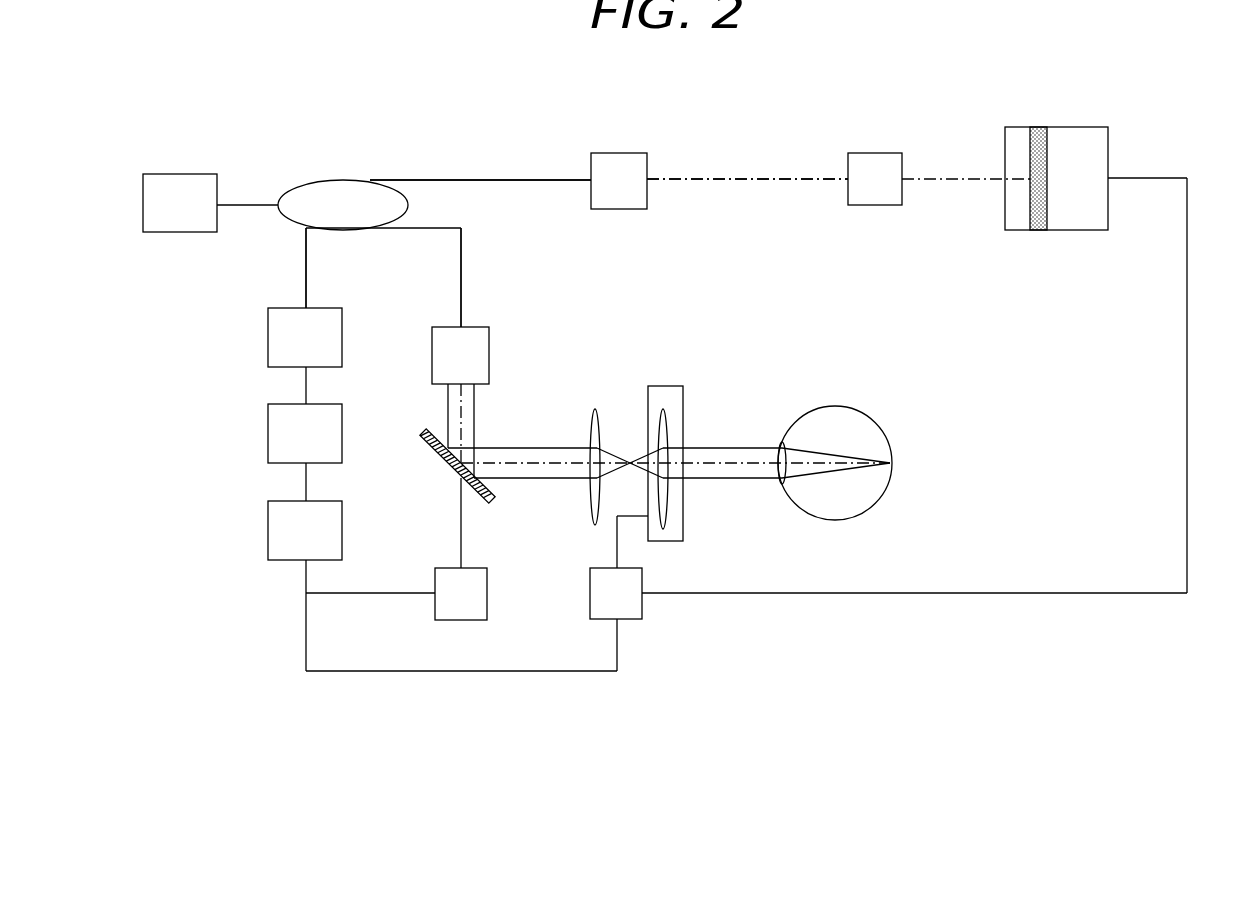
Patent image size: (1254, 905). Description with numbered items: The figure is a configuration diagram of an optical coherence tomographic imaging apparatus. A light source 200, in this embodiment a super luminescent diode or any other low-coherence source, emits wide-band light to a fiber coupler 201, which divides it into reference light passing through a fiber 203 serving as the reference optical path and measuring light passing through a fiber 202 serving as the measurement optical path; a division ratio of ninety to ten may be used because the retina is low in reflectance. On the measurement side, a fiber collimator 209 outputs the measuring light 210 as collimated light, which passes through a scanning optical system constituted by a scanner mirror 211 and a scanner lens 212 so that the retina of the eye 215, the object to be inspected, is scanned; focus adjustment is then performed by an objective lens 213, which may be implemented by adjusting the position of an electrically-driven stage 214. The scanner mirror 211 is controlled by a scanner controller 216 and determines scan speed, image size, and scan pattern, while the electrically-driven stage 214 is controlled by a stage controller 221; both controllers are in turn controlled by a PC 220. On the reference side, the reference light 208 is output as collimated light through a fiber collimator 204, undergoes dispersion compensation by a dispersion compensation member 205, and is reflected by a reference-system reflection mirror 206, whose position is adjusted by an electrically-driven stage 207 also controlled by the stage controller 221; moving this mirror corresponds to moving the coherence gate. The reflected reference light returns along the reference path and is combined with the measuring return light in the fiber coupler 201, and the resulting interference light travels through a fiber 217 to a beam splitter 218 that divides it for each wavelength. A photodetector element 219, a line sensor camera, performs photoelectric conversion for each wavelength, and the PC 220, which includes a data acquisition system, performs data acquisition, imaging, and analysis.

The light source 200 is at (183, 174).
The fiber coupler 201 is at (345, 180).
The fiber 202 is at (462, 261).
The fiber 203 is at (485, 180).
The fiber collimator 204 is at (619, 153).
The dispersion compensation member 205 is at (876, 153).
The reference-system reflection mirror 206 is at (1039, 127).
The electrically-driven stage 207 is at (1091, 131).
The reference light 208 is at (742, 180).
The fiber collimator 209 is at (489, 350).
The measuring light 210 is at (462, 410).
The scanner mirror 211 is at (449, 464).
The scanner lens 212 is at (590, 427).
The objective lens 213 is at (659, 428).
The electrically-driven stage 214 is at (666, 386).
The eye 215 is at (893, 450).
The scanner controller 216 is at (487, 593).
The fiber 217 is at (305, 276).
The beam splitter 218 is at (268, 338).
The photodetector element 219 is at (268, 434).
The PC 220 is at (268, 532).
The stage controller 221 is at (642, 576).